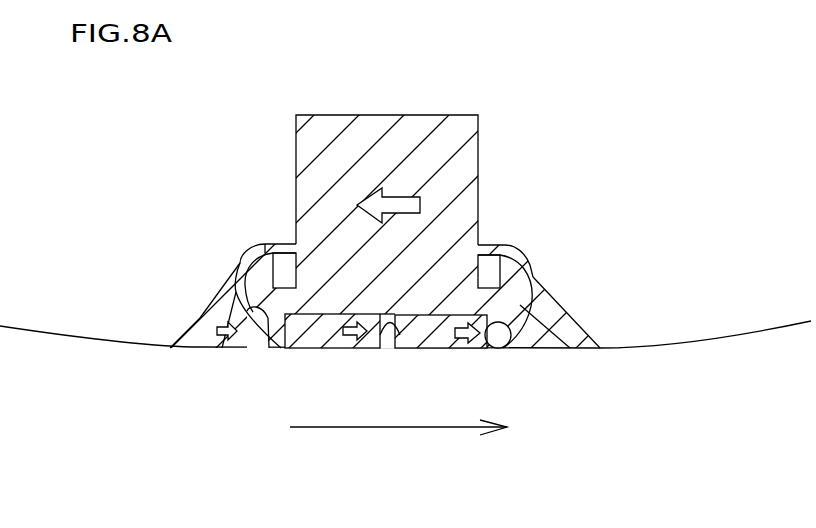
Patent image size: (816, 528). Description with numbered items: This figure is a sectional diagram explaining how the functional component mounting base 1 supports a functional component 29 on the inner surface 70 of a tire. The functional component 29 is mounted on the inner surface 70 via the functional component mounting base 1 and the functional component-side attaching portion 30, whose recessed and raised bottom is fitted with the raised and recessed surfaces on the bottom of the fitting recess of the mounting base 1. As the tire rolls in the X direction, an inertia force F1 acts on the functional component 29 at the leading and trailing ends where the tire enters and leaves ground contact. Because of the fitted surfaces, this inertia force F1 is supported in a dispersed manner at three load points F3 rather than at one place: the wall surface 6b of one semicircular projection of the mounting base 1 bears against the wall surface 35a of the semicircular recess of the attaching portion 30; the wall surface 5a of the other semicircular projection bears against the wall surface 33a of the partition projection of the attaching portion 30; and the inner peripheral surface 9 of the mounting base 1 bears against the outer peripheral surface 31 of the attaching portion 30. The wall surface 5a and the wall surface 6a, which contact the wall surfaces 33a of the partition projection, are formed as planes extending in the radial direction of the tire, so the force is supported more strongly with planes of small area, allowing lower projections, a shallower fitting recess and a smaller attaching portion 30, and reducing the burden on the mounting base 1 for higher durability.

The functional component mounting base 1 is at (553, 290).
The functional component 29 is at (478, 160).
The functional component-side attaching portion 30 is at (508, 263).
The inner surface 70 is at (620, 348).
The outer peripheral surface 31 is at (236, 349).
The inner peripheral surface 9 is at (264, 346).
The wall surface 5a is at (387, 336).
The wall surface 33a is at (371, 334).
The wall surface 35a is at (478, 345).
The wall surface 6a is at (405, 337).
The wall surface 6b is at (510, 346).
The inertia force F1 is at (399, 197).
The load point F3 is at (226, 342).
The X direction X is at (367, 428).